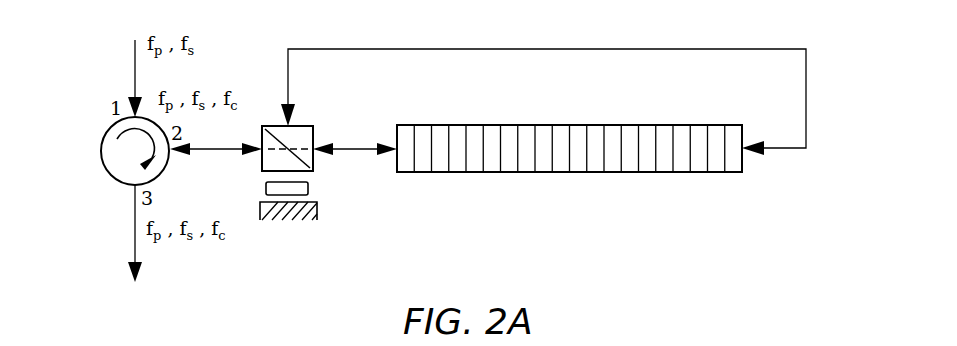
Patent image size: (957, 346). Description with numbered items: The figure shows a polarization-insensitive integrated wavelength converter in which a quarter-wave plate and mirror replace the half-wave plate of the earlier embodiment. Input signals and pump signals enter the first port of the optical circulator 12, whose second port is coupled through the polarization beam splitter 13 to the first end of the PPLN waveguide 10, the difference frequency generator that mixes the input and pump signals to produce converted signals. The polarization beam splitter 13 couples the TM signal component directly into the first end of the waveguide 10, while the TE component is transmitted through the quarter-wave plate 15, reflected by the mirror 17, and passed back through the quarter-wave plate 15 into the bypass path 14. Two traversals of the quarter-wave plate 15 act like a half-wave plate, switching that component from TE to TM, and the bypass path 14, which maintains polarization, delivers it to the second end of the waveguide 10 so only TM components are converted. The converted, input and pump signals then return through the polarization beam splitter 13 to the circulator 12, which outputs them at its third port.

The PPLN waveguide 10 is at (569, 125).
The optical circulator 12 is at (102, 141).
The polarization beam splitter 13 is at (324, 119).
The optical bypass path 14 is at (543, 81).
The quarter-wave plate 15 is at (334, 199).
The mirror 17 is at (334, 225).